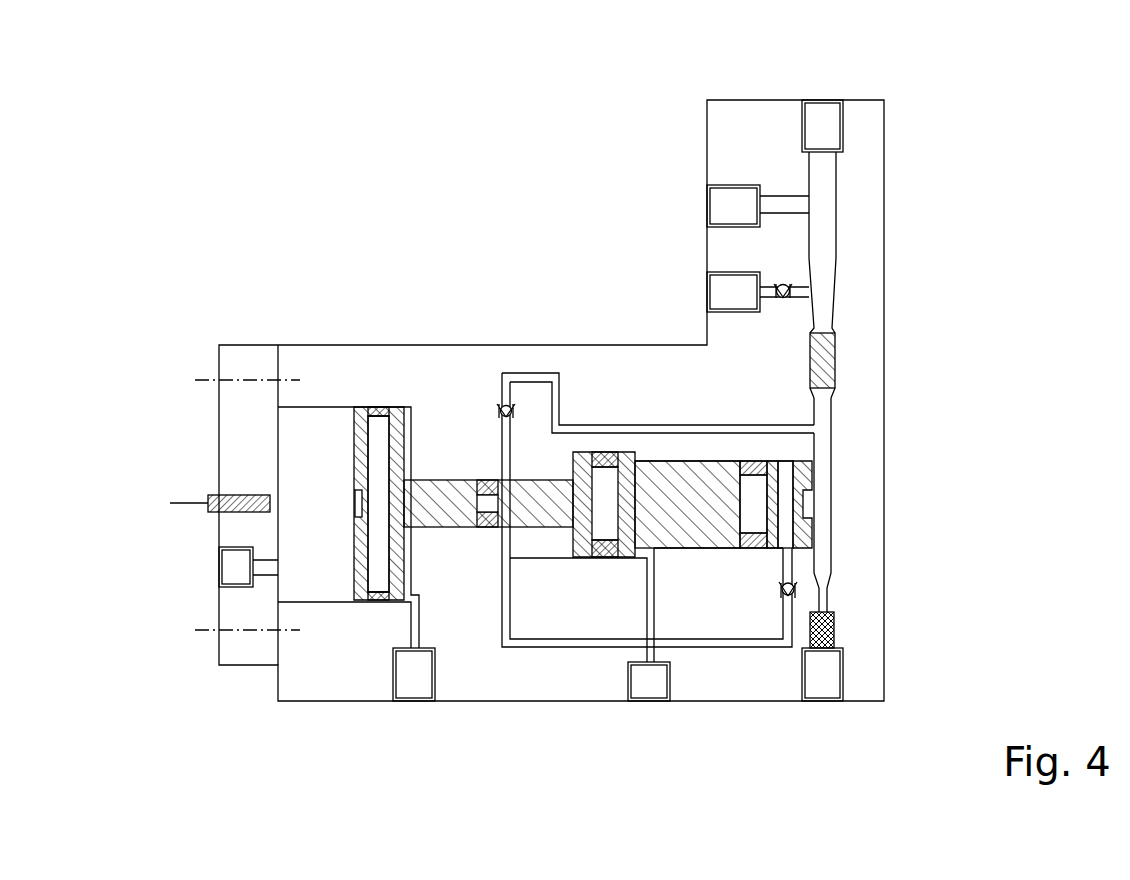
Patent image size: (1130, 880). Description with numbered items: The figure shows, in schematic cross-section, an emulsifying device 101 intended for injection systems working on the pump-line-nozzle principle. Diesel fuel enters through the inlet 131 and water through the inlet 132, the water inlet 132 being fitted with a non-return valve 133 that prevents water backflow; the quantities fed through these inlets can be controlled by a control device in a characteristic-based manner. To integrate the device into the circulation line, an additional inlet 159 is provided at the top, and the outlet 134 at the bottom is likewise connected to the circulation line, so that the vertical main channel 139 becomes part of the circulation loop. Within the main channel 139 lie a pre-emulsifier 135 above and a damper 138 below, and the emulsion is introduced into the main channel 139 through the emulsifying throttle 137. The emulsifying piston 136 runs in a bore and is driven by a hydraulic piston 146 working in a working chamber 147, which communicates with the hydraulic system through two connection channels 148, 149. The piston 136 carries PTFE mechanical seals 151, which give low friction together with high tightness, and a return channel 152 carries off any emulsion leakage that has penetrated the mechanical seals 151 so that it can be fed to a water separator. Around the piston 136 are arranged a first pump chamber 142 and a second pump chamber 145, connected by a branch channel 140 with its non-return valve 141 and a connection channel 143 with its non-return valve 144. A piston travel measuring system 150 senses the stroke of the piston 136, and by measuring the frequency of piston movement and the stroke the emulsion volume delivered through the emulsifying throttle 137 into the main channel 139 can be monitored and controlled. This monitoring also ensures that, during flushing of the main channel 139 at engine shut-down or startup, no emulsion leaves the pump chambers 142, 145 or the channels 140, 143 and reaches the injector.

The emulsifying device 101 is at (316, 343).
The inlet (diesel fuel) 131 is at (706, 205).
The inlet (water) 132 is at (706, 290).
The non-return valve (water supply) 133 is at (791, 287).
The outlet 134 is at (822, 702).
The pre-emulsifier 135 is at (823, 360).
The piston 136 is at (682, 495).
The emulsifying throttle 137 is at (800, 503).
The damper 138 is at (835, 628).
The main channel 139 is at (822, 443).
The branch channel 140 is at (760, 423).
The non-return valve 141 is at (504, 404).
The first pump chamber 142 is at (545, 542).
The connection channel 143 is at (713, 648).
The non-return valve 144 is at (785, 596).
The second pump chamber 145 is at (785, 478).
The hydraulic piston 146 is at (359, 573).
The working chamber 147 is at (320, 558).
The connection channel (hydraulic system) 148 is at (219, 565).
The connection channel (hydraulic system) 149 is at (413, 702).
The piston position sensor 150 is at (213, 498).
The mechanical seals 151 is at (483, 478).
The return channel 152 is at (648, 702).
The inlet 159 is at (822, 99).